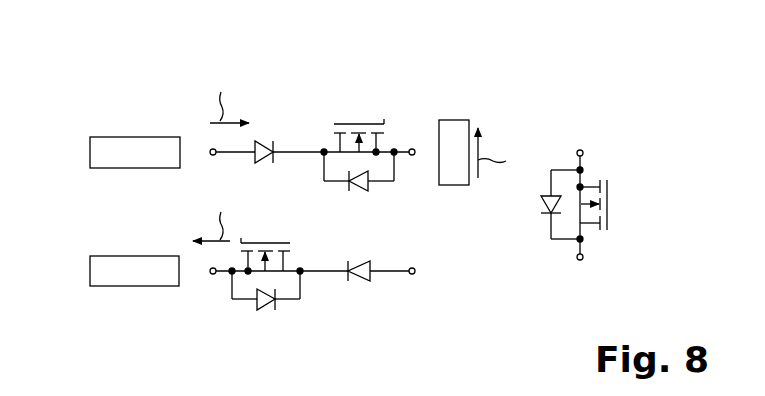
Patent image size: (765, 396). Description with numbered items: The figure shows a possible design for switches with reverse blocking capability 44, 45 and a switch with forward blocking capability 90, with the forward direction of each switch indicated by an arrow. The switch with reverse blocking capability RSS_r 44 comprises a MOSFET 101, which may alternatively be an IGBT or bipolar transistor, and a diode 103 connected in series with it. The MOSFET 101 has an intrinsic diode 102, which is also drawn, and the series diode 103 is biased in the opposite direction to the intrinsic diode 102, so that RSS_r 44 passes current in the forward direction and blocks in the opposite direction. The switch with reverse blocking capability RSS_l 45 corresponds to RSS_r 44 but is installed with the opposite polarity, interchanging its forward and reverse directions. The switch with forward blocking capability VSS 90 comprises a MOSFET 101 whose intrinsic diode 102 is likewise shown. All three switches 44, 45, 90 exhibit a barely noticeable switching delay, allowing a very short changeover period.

The switch with reverse blocking capability RSS_r 44 is at (135, 137).
The switch with reverse blocking capability RSS_l 45 is at (135, 286).
The switch with forward blocking capability VSS 90 is at (452, 120).
The MOSFET 101 is at (358, 124).
The intrinsic diode 102 is at (358, 192).
The diode 103 is at (258, 141).